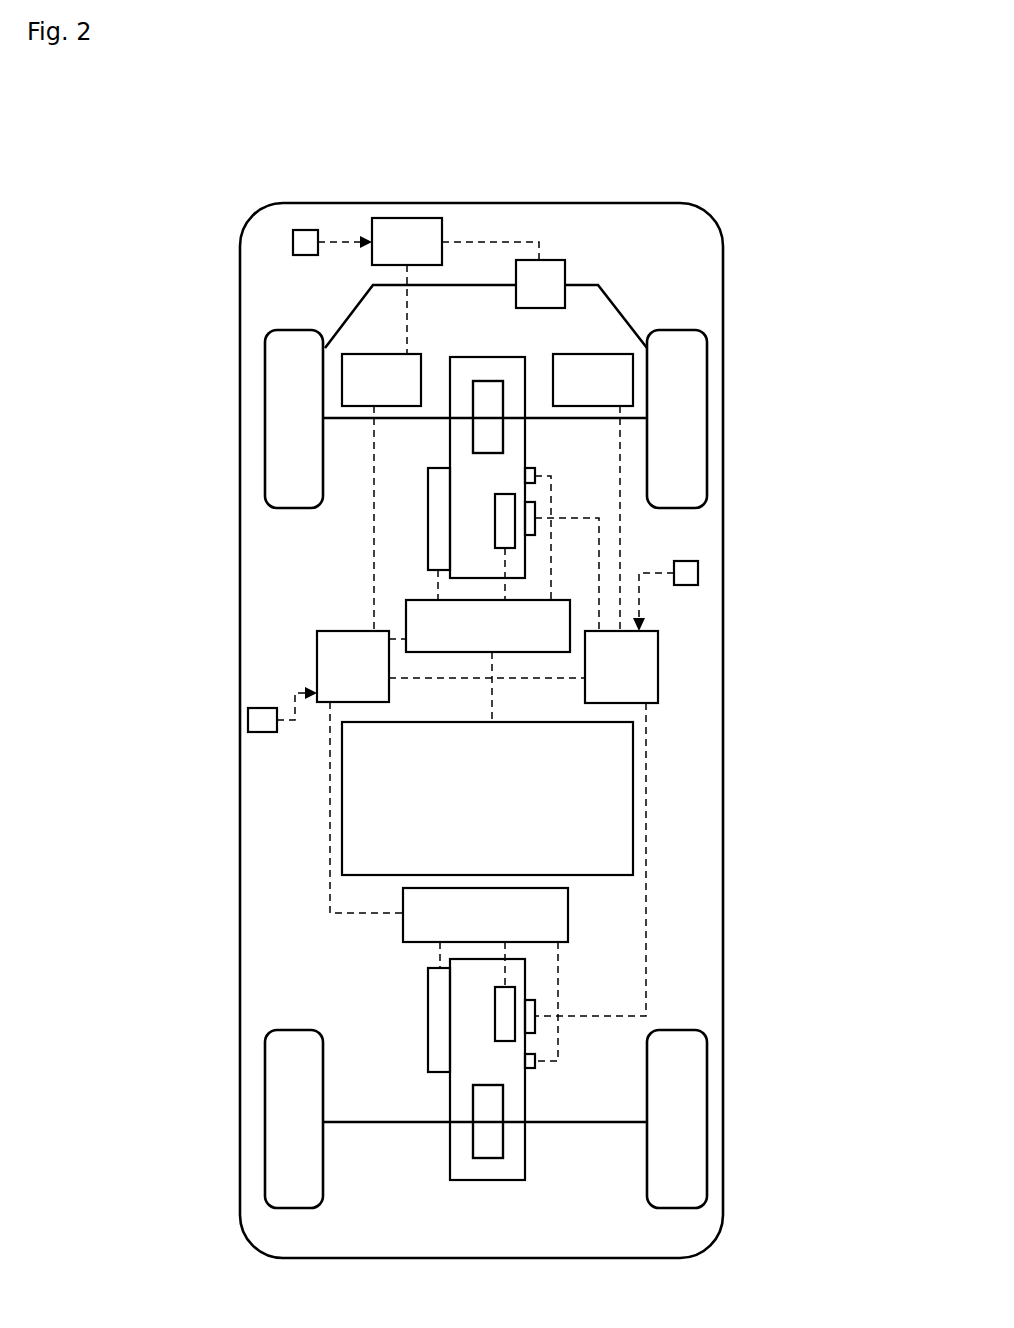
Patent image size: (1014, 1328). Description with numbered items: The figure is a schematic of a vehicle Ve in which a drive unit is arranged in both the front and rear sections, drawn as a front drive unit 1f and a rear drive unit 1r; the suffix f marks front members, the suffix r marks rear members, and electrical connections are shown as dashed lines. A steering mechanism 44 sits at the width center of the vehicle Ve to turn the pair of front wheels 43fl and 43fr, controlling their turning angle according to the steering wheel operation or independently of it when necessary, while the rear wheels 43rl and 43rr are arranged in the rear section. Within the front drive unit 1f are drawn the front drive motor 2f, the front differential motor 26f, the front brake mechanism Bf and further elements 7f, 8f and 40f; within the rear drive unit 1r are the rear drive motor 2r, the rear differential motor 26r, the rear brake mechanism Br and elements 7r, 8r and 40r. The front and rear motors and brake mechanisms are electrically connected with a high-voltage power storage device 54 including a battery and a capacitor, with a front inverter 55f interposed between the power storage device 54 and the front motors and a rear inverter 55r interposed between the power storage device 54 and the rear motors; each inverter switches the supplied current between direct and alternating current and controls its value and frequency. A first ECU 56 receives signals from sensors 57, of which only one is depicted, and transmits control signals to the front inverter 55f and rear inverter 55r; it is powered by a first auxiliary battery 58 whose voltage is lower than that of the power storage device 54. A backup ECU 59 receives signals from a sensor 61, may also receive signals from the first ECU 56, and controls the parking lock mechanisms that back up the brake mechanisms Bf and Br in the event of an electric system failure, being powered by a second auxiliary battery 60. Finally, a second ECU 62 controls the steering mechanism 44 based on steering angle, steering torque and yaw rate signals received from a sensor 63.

The vehicle Ve is at (752, 216).
The front left wheel 43fl is at (278, 416).
The front right wheel 43fr is at (693, 414).
The rear left wheel 43rl is at (280, 1105).
The rear right wheel 43rr is at (693, 1104).
The second electronic control unit 62 is at (408, 236).
The sensor 63 is at (304, 258).
The steering mechanism 44 is at (552, 268).
The first auxiliary battery 58 is at (403, 378).
The second auxiliary battery 60 is at (594, 384).
The front drive unit 1f is at (456, 372).
The front motor 7f is at (492, 394).
The front generator 8f is at (492, 394).
The front drive motor 2f is at (438, 486).
The front brake mechanism Bf is at (503, 528).
The front actuator 40f is at (528, 470).
The front differential motor 26f is at (535, 512).
The front inverter 55f is at (414, 610).
The first electronic control unit 56 is at (328, 637).
The backup electronic control unit 59 is at (643, 666).
The sensor 61 is at (690, 573).
The sensor 57 is at (262, 716).
The high-voltage power storage device 54 is at (354, 797).
The rear inverter 55r is at (556, 915).
The rear drive unit 1r is at (458, 1173).
The rear drive motor 2r is at (438, 1002).
The rear brake mechanism Br is at (502, 1007).
The rear differential motor 26r is at (535, 1008).
The rear actuator 40r is at (534, 1066).
The rear motor 7r is at (486, 1150).
The rear generator 8r is at (486, 1150).